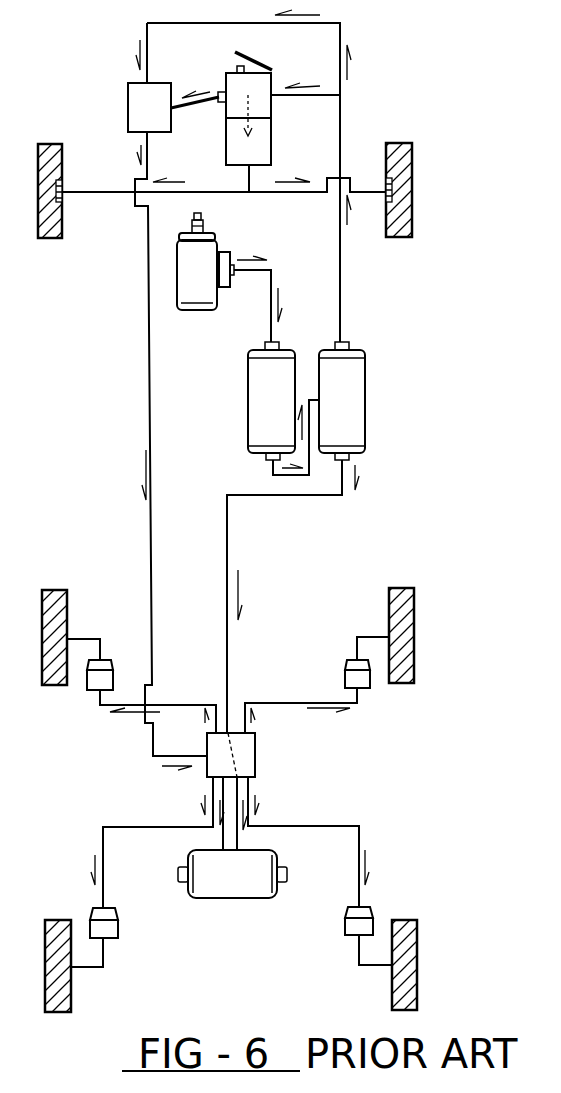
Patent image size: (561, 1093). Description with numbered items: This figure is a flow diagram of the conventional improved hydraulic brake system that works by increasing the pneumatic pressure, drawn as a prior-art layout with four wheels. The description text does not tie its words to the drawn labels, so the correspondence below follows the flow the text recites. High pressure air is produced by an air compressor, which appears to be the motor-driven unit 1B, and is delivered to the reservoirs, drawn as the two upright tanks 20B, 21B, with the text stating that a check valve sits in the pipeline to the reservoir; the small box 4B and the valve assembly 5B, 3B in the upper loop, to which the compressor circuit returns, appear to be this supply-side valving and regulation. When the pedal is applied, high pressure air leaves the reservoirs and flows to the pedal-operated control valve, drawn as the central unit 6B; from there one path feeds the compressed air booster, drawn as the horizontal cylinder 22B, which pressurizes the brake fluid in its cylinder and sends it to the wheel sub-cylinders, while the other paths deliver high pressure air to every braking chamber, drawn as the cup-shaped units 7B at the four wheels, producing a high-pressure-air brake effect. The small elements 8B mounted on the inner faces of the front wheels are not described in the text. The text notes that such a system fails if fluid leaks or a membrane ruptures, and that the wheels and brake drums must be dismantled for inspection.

The compressor 1B is at (205, 261).
The pressure regulator 3B is at (248, 142).
The governor 4B is at (149, 107).
The unloader valve 5B is at (221, 94).
The brake valve 6B is at (231, 755).
The brake cylinder 7B is at (230, 798).
The wheel speed sensor 8B is at (225, 190).
The first air reservoir 20B is at (271, 401).
The second air reservoir 21B is at (342, 401).
The relay valve 22B is at (232, 874).